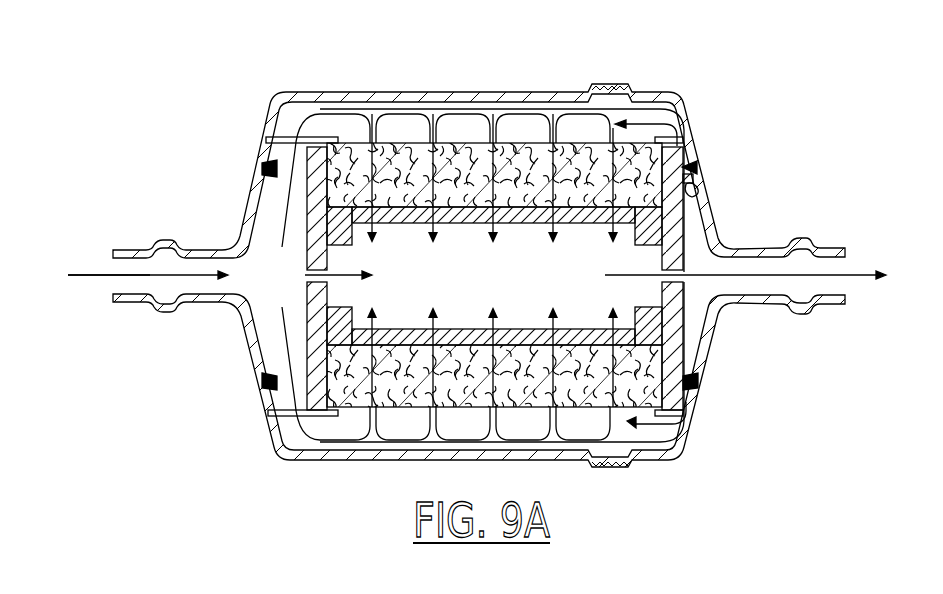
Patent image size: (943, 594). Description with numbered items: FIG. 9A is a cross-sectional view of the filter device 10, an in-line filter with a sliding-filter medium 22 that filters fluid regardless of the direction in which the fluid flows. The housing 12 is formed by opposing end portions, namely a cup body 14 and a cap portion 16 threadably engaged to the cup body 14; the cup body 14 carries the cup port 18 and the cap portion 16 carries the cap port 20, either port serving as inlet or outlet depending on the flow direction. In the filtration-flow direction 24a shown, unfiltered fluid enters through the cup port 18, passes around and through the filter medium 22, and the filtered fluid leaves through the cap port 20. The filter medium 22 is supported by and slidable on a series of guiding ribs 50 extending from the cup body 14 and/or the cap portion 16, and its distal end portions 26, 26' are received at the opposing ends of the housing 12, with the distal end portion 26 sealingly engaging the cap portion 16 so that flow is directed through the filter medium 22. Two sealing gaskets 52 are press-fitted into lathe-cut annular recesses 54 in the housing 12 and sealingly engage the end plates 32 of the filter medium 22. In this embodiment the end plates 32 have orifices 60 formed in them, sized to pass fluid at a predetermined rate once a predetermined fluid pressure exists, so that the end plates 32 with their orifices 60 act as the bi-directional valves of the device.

The filter device 10 is at (158, 200).
The housing 12 is at (278, 96).
The cup body 14 is at (262, 143).
The cap portion 16 is at (702, 143).
The cup port 18 is at (846, 265).
The cap port 20 is at (112, 262).
The sliding-filter medium 22 is at (513, 143).
The filtration-flow direction 24a is at (85, 281).
The distal end portion 26 is at (715, 286).
The distal end portion 26' is at (275, 290).
The end plate 32 is at (306, 274).
The guiding ribs 50 is at (338, 124).
The sealing gaskets 52 is at (262, 170).
The annular recesses 54 is at (696, 192).
The orifices 60 is at (323, 278).